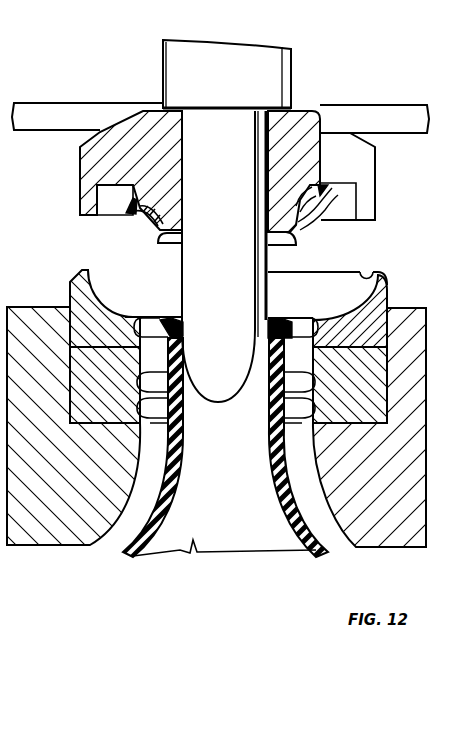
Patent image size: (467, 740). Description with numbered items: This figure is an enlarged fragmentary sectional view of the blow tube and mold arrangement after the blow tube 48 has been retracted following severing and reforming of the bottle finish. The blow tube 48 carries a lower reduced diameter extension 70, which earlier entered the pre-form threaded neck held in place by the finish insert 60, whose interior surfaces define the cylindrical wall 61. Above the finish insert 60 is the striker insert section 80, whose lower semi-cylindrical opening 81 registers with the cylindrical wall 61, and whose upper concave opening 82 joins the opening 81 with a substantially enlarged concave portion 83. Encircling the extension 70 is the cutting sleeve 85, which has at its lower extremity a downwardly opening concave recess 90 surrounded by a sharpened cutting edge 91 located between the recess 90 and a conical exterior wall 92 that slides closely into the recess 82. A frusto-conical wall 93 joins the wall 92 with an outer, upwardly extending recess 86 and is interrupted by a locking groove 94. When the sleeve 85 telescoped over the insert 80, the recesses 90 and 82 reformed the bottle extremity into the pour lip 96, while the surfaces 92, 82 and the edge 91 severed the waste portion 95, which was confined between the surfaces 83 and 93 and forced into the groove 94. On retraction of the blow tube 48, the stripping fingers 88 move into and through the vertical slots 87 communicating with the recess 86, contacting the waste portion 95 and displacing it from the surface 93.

The blow tube 48 is at (157, 70).
The stripping fingers 88 is at (363, 113).
The vertical slots 87 is at (362, 165).
The waste portion 95 is at (357, 212).
The cutting sleeve 85 is at (72, 206).
The outer upwardly extending recess 86 is at (105, 208).
The locking groove 94 is at (134, 216).
The frusto-conical wall 93 is at (147, 229).
The reduced diameter extension 70 is at (232, 166).
The concave recess 90 is at (284, 242).
The sharpened cutting edge 91 is at (310, 240).
The cylindrical exterior conical wall 92 is at (318, 230).
The upper enlarged concave portion 83 is at (365, 278).
The striker insert section 80 is at (376, 280).
The lower semi-cylindrical opening 81 is at (384, 308).
The concave opening 82 is at (316, 320).
The pour lip 96 is at (289, 318).
The finish insert 60 is at (357, 409).
The cylindrical wall 61 is at (286, 414).